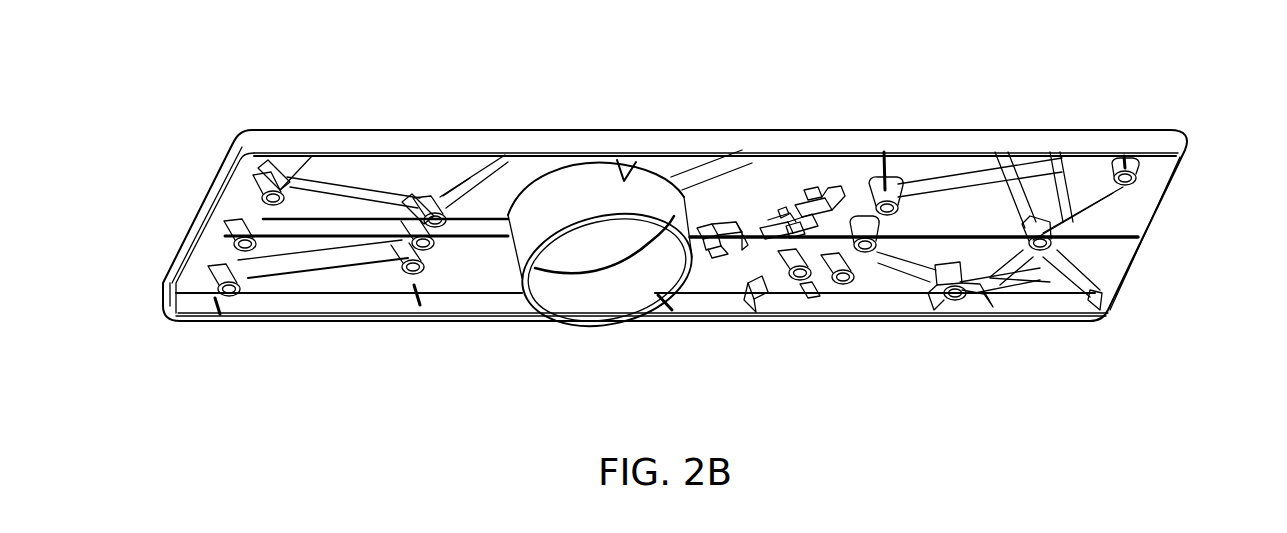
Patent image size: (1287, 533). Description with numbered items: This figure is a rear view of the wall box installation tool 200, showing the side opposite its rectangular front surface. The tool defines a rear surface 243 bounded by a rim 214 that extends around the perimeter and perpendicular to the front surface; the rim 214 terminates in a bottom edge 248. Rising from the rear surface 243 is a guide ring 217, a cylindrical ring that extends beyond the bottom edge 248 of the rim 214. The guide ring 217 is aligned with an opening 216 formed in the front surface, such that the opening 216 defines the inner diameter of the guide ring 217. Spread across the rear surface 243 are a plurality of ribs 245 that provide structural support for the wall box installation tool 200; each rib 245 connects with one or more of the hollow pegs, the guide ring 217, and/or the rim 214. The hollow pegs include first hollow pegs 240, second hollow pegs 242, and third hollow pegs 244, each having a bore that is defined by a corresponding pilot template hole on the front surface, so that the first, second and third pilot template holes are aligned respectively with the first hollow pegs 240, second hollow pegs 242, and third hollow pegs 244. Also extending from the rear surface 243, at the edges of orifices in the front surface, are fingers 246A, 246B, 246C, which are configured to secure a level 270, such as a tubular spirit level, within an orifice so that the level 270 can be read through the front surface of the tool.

The wall box installation tool 200 is at (1134, 40).
The rim 214 is at (700, 300).
The opening 216 is at (572, 273).
The guide ring 217 is at (570, 193).
The first hollow pegs 240 is at (385, 242).
The second hollow pegs 242 is at (395, 232).
The rear surface 243 is at (460, 278).
The third hollow pegs 244 is at (418, 205).
The ribs 245 is at (458, 172).
The finger 246A is at (708, 218).
The finger 246B is at (764, 202).
The finger 246C is at (805, 168).
The bottom edge 248 is at (413, 152).
The level 270 is at (755, 298).